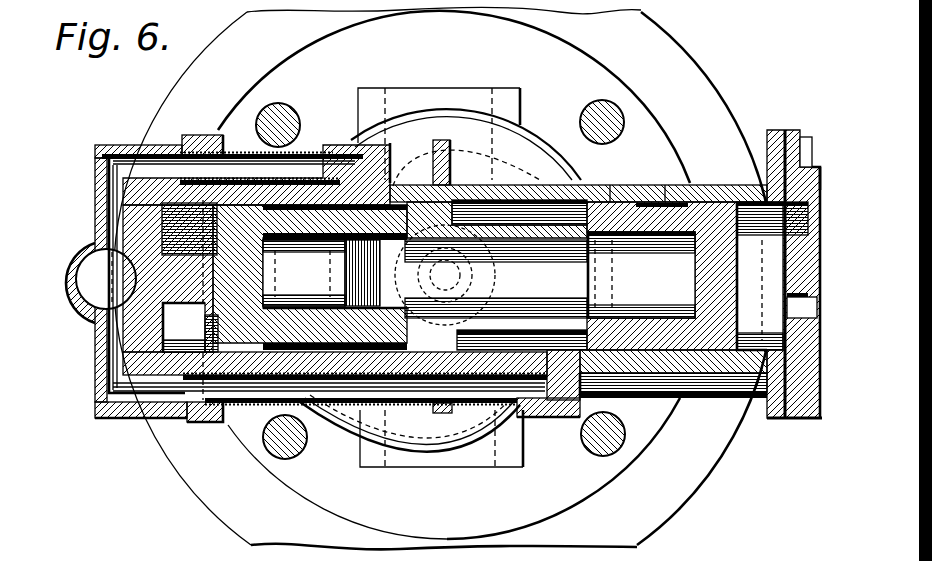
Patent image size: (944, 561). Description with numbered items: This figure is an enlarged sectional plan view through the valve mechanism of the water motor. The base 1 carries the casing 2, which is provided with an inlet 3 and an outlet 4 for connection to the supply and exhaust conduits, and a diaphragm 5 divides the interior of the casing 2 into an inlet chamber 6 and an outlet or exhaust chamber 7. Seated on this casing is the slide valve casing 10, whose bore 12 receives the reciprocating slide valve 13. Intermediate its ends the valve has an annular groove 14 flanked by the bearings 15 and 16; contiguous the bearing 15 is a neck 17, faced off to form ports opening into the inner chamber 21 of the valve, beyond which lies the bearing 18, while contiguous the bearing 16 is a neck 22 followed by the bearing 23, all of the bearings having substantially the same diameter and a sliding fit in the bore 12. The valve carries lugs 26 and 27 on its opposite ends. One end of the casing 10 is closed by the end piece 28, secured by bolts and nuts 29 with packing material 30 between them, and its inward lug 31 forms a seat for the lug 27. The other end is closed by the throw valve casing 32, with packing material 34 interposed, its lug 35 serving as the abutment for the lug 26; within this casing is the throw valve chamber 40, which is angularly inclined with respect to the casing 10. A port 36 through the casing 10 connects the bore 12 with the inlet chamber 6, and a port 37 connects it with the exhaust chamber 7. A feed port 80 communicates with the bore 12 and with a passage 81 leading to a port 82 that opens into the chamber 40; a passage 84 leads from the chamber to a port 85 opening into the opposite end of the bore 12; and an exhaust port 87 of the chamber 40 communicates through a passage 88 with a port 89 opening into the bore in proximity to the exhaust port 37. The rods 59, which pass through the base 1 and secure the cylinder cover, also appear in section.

The base 1 is at (444, 278).
The casing 2 is at (532, 140).
The inlet 3 is at (452, 88).
The outlet 4 is at (492, 467).
The diaphragm 5 is at (445, 275).
The inlet chamber 6 is at (535, 178).
The outlet chamber 7 is at (425, 413).
The slide valve casing 10 is at (700, 190).
The bore 12 is at (182, 392).
The slide valve 13 is at (700, 281).
The annular groove 14 is at (500, 195).
The bearing 15 is at (612, 200).
The bearing 16 is at (448, 195).
The neck 17 is at (665, 195).
The bearing 18 is at (657, 385).
The inner chamber 21 is at (496, 279).
The neck 22 is at (318, 320).
The bearing 23 is at (230, 165).
The lug 26 is at (255, 270).
The lug 27 is at (777, 321).
The end piece 28 is at (797, 130).
The bolts and nuts 29 is at (806, 137).
The packing material 30 is at (782, 128).
The lug 31 is at (795, 270).
The throw valve casing 32 is at (95, 150).
The packing material 34 is at (205, 135).
The lug 35 is at (190, 327).
The port 36 is at (522, 312).
The port 37 is at (370, 274).
The throw valve chamber 40 is at (101, 283).
The rods 59 is at (285, 108).
The feed port 80 is at (555, 418).
The passage 81 is at (223, 416).
The port 82 is at (100, 328).
The passage 84 is at (673, 396).
The port 85 is at (800, 418).
The exhaust port 87 is at (100, 240).
The passage 88 is at (138, 178).
The port 89 is at (407, 163).